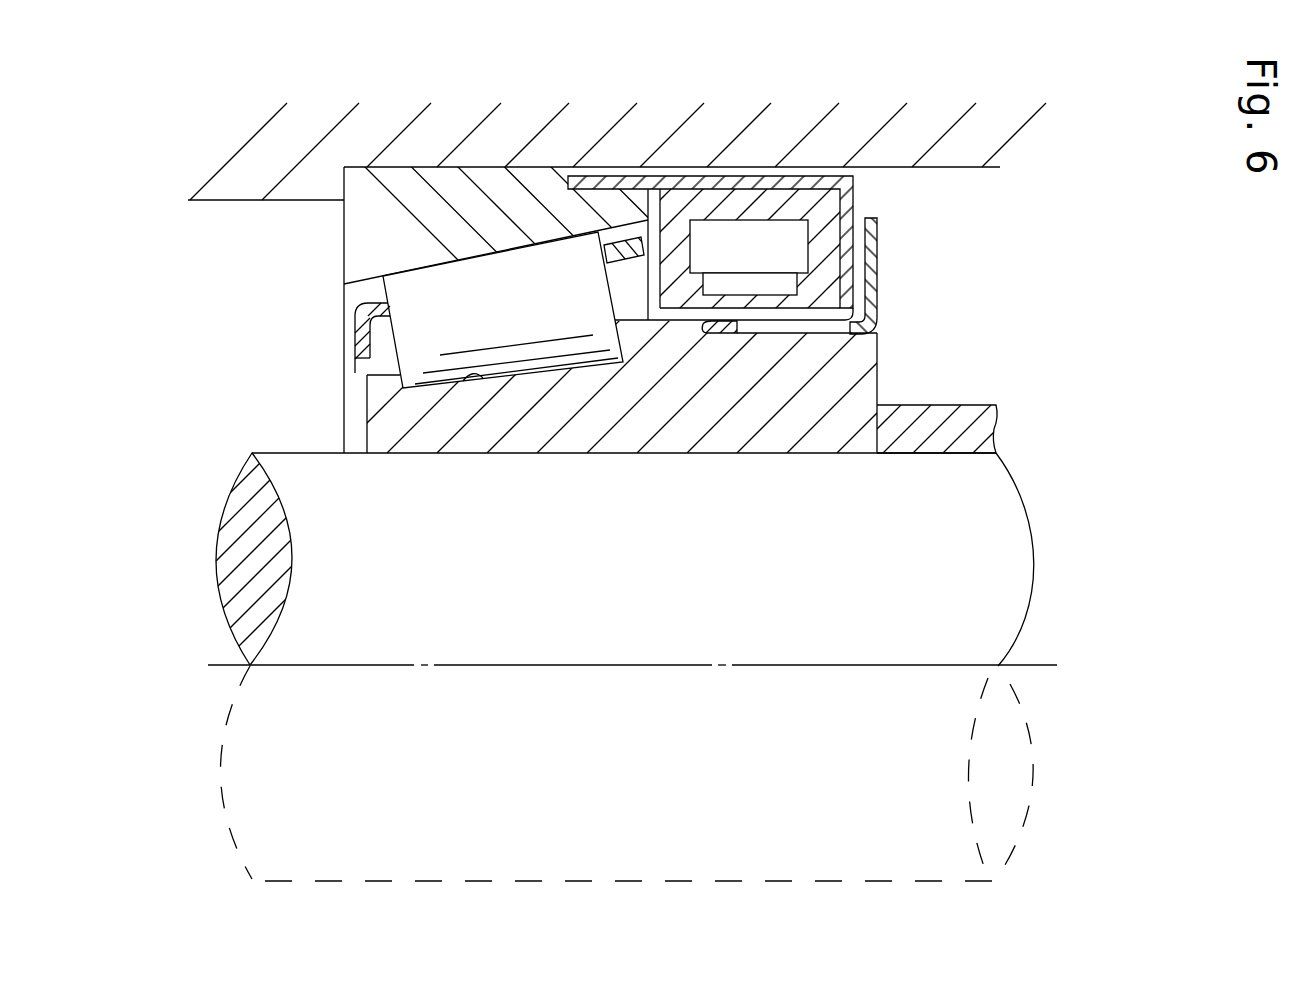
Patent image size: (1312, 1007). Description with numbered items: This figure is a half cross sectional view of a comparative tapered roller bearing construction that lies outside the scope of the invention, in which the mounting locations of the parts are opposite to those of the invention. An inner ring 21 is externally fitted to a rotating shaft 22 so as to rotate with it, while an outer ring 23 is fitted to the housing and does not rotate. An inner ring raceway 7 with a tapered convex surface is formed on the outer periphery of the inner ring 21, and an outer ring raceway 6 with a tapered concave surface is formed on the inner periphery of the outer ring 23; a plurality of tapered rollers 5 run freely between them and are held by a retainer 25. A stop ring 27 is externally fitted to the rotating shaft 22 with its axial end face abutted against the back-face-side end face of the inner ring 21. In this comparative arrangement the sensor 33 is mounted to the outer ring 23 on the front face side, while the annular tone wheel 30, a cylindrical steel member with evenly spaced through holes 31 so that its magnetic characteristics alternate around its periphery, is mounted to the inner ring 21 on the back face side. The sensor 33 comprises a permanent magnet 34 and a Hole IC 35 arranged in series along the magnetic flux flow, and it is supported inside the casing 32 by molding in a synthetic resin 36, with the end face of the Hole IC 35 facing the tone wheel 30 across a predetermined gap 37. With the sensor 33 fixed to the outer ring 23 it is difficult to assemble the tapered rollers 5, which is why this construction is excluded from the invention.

The tapered rollers 5 is at (413, 347).
The outer ring raceway 6 is at (478, 256).
The inner ring raceway 7 is at (465, 380).
The inner ring 21 is at (523, 437).
The rotating shaft 22 is at (1009, 536).
The outer ring 23 is at (420, 190).
The retainer 25 is at (353, 320).
The stop ring 27 is at (940, 405).
The tone wheel 30 is at (853, 330).
The through holes 31 is at (712, 335).
The casing 32 is at (853, 208).
The sensor 33 is at (765, 233).
The permanent magnet 34 is at (715, 233).
The Hole IC 35 is at (760, 288).
The synthetic resin 36 is at (668, 297).
The gap 37 is at (795, 320).